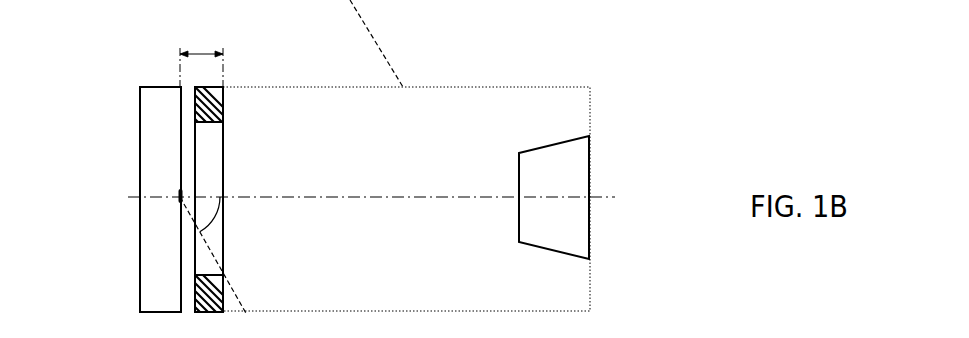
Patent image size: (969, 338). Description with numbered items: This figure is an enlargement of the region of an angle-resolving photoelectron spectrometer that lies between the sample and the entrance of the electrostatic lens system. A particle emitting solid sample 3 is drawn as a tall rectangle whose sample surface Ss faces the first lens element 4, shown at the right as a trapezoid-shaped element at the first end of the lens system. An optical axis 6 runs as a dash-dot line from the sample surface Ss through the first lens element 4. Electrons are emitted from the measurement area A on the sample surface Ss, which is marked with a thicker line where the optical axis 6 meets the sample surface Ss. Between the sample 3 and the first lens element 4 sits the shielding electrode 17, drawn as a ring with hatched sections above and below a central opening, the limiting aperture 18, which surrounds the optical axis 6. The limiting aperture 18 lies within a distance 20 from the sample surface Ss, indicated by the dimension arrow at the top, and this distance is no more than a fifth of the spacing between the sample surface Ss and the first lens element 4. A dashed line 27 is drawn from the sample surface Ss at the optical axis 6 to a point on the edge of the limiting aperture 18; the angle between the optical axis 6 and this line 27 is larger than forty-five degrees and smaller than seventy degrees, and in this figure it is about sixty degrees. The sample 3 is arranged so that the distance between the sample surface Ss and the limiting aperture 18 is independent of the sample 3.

The particle emitting solid sample 3 is at (150, 153).
The first lens element 4 is at (558, 228).
The optical axis 6 is at (600, 192).
The shielding electrode 17 is at (152, 204).
The limiting aperture 18 is at (207, 276).
The distance 20 is at (205, 53).
The line 27 is at (237, 299).
The measurement area A is at (178, 195).
The sample surface Ss is at (180, 147).